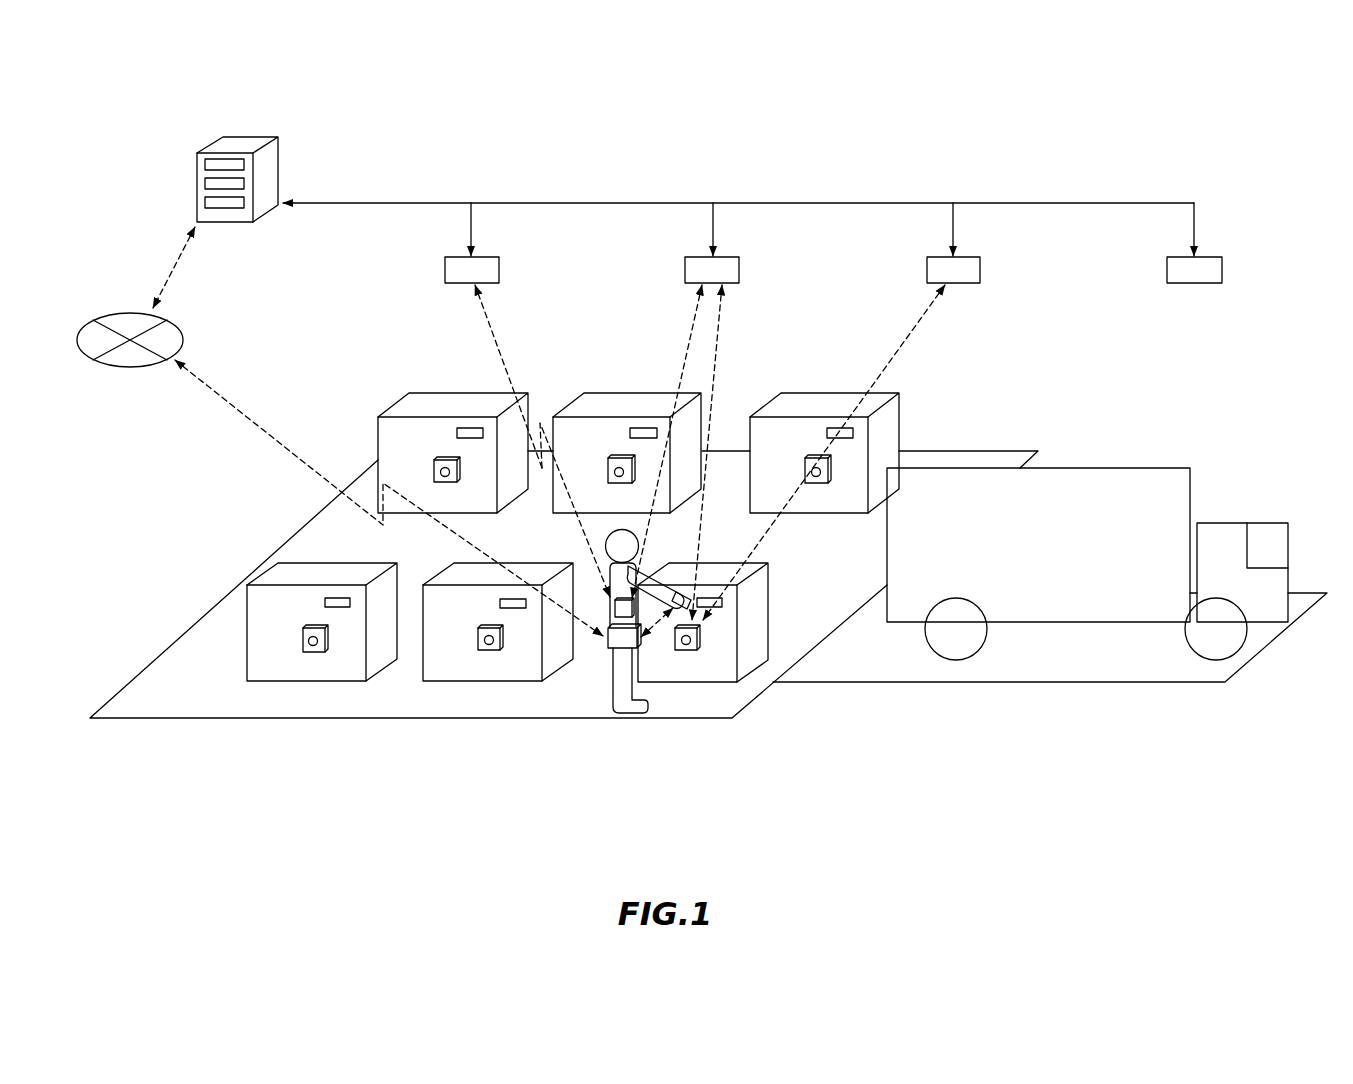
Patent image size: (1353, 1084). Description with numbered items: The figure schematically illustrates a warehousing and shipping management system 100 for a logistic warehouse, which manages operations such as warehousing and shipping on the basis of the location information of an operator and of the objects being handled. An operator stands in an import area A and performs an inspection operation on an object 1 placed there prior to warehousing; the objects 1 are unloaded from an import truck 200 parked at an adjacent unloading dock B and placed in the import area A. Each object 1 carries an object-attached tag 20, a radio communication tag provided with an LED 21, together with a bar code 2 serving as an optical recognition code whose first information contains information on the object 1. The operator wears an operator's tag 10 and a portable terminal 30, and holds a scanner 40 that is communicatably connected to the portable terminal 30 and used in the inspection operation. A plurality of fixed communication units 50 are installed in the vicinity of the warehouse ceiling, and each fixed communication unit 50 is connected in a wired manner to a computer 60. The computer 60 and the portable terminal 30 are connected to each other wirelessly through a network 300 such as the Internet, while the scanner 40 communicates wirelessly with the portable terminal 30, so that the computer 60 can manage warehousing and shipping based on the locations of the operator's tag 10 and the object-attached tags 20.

The object 1 is at (395, 405).
The bar code 2 is at (473, 428).
The operator's tag 10 is at (608, 618).
The object-attached tag 20 is at (432, 458).
The LED 21 is at (444, 458).
The portable terminal 30 is at (610, 652).
The scanner 40 is at (678, 609).
The fixed communication unit 50 is at (499, 283).
The computer 60 is at (280, 160).
The management system 100 is at (942, 125).
The import truck 200 is at (1190, 468).
The network 300 is at (140, 367).
The import area A is at (188, 655).
The unloading dock B is at (1053, 660).